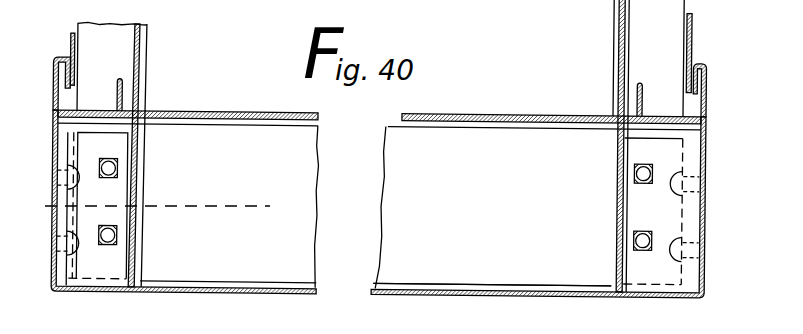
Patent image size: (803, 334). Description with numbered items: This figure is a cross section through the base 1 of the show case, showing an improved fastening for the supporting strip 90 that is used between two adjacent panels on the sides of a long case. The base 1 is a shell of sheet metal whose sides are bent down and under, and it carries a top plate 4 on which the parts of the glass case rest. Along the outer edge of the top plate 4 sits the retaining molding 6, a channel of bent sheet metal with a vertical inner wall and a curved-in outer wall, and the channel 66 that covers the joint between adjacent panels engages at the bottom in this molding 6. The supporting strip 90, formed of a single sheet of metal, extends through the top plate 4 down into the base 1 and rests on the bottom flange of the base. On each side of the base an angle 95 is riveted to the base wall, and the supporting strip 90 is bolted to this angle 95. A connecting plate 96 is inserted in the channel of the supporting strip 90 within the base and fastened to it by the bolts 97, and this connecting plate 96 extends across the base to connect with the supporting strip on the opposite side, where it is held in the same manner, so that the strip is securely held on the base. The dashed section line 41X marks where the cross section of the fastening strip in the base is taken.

The base 1 is at (53, 140).
The top plate 4 is at (401, 117).
The retaining molding 6 is at (55, 72).
The channel 66 is at (71, 48).
The supporting strip 90 is at (150, 53).
The angle 95 is at (125, 231).
The connecting plate 96 is at (447, 275).
The bolts 97 is at (114, 166).
The section line 41X is at (161, 210).